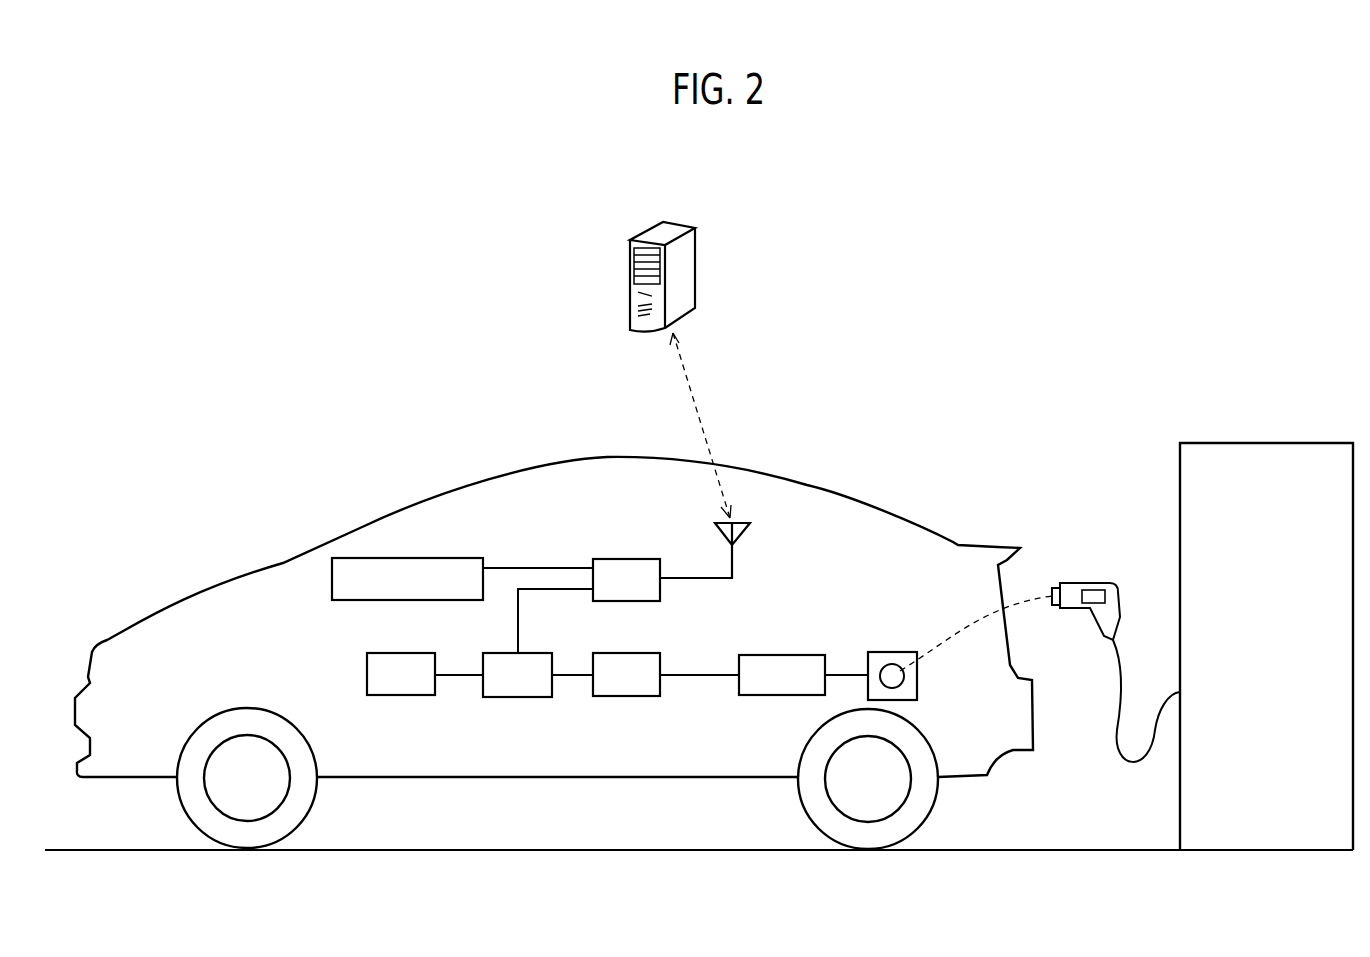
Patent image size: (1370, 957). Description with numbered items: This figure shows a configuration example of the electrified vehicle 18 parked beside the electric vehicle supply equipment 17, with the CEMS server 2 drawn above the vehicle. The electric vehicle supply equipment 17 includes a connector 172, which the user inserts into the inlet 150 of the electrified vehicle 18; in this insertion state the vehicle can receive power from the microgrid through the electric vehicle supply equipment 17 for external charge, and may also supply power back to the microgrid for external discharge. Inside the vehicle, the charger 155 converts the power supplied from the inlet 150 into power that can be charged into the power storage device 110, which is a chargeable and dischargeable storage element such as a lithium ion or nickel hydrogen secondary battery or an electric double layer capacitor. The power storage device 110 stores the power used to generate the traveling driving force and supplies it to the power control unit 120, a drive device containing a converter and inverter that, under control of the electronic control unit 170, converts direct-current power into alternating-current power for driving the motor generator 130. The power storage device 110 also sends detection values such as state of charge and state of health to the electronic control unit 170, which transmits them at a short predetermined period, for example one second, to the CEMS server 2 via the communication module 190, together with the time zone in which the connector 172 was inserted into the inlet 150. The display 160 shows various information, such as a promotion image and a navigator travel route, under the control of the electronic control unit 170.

The CEMS server 2 is at (697, 270).
The electric vehicle supply equipment 17 is at (1297, 442).
The electrified vehicle 18 is at (867, 493).
The power storage device 110 is at (622, 652).
The power control unit (PCU) 120 is at (527, 652).
The motor generator 130 is at (365, 677).
The inlet 150 is at (890, 652).
The charger 155 is at (775, 652).
The display 160 is at (420, 555).
The electronic control unit (ECU) 170 is at (622, 557).
The connector 172 is at (1080, 580).
The communication module 190 is at (737, 522).